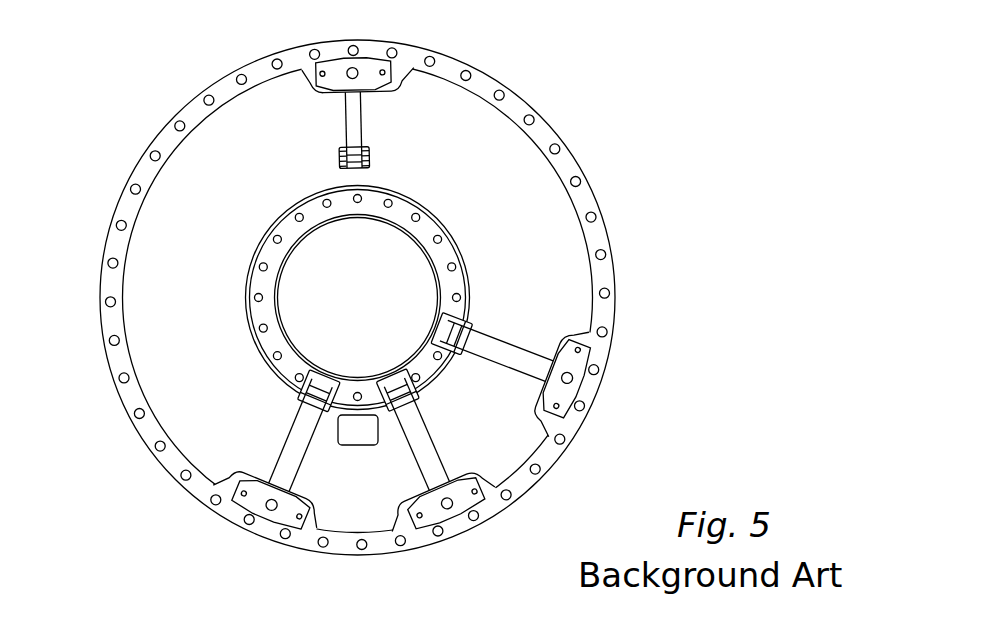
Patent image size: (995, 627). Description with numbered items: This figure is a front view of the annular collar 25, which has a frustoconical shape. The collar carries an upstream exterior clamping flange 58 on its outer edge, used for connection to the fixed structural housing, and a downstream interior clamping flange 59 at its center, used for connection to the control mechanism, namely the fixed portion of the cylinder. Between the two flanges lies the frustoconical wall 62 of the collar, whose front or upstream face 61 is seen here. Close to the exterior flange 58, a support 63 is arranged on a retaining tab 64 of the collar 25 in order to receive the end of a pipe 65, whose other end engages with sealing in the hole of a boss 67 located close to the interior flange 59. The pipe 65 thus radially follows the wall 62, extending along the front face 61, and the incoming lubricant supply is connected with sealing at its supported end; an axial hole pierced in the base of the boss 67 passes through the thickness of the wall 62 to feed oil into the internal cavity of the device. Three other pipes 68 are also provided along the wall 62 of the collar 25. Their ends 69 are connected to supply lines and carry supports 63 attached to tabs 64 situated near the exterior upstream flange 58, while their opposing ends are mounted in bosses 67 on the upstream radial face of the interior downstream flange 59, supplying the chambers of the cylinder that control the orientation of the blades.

The annular collar 25 is at (598, 185).
The upstream exterior clamping flange 58 is at (614, 269).
The downstream interior clamping flange 59 is at (297, 229).
The front face 61 is at (214, 244).
The wall 62 is at (164, 340).
The support 63 is at (338, 70).
The retaining tab 64 is at (400, 84).
The pipe 65 is at (352, 120).
The boss 67 is at (373, 157).
The other pipes 68 is at (497, 348).
The ends of the pipes 69 is at (571, 381).